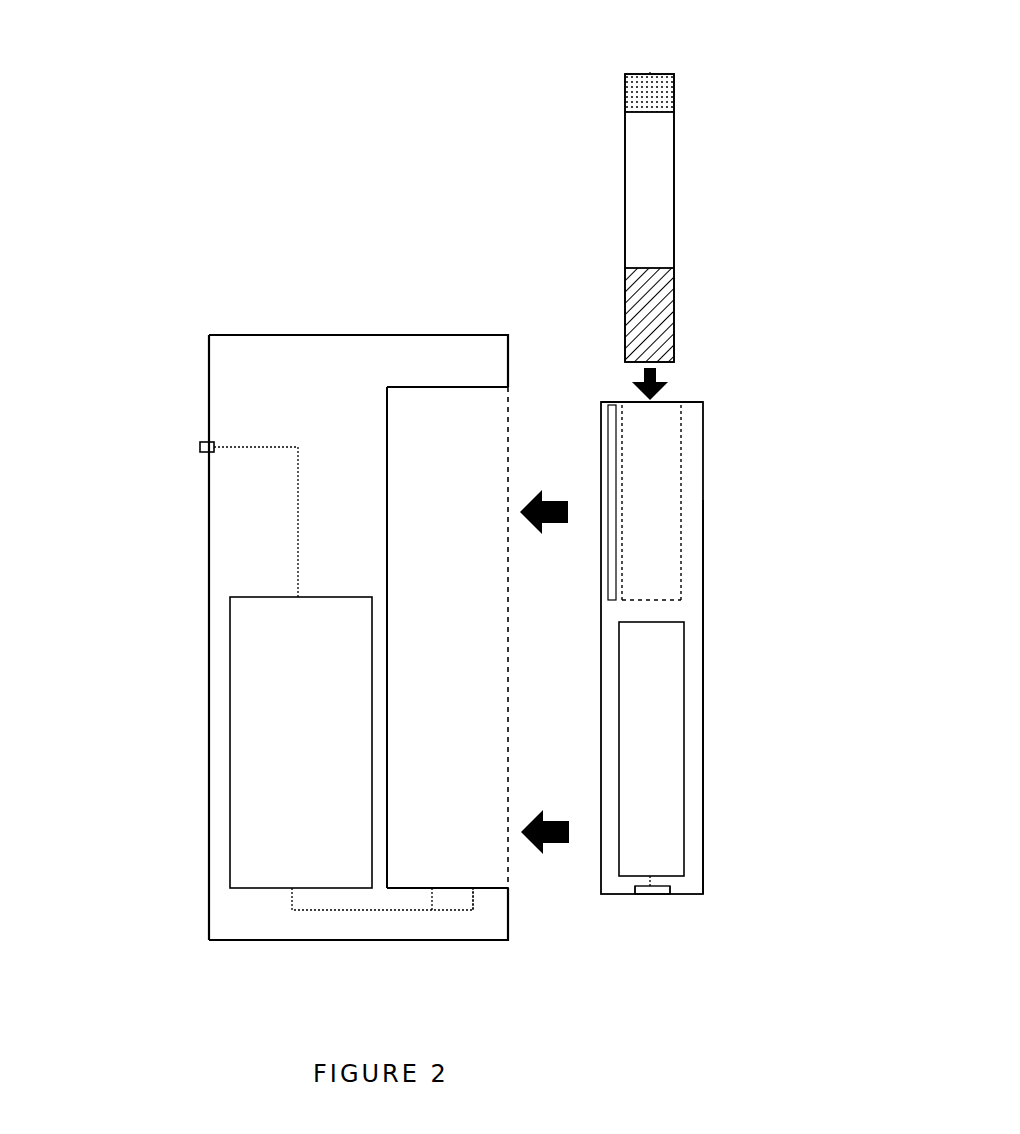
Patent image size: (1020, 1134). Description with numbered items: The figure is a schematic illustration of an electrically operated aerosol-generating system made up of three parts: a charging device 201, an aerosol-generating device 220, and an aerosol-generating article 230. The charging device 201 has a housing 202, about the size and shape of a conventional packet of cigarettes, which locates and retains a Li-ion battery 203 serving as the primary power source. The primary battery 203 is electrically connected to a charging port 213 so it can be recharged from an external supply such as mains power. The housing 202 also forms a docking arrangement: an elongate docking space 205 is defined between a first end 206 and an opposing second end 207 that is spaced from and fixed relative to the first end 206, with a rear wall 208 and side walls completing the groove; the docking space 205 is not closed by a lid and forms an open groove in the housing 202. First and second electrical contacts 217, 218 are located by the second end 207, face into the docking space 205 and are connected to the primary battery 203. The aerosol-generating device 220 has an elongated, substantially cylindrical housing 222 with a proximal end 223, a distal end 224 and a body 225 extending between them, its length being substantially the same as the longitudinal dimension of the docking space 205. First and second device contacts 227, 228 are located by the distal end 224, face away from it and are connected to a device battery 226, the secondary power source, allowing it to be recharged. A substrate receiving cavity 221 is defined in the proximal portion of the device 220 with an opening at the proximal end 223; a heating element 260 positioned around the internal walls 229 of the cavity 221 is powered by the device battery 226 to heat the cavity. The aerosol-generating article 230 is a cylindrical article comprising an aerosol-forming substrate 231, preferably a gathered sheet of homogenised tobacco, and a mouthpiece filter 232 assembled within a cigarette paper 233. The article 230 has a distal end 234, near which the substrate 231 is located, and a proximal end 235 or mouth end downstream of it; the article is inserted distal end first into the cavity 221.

The charging device 201 is at (228, 316).
The housing 202 is at (208, 372).
The Li-ion battery 203 is at (253, 750).
The docking space 205 is at (470, 633).
The first end 206 is at (455, 388).
The second end 207 is at (490, 888).
The rear wall 208 is at (390, 498).
The charging port 213 is at (198, 448).
The first electrical contact 217 is at (432, 888).
The second electrical contact 218 is at (473, 888).
The aerosol-generating device 220 is at (716, 152).
The substrate receiving cavity 221 is at (665, 508).
The housing 222 is at (703, 790).
The proximal end 223 is at (690, 402).
The distal end 224 is at (695, 895).
The body 225 is at (703, 606).
The device battery 226 is at (667, 710).
The first device contact 227 is at (632, 895).
The second device contact 228 is at (665, 895).
The internal walls 229 is at (685, 556).
The aerosol-generating article 230 is at (716, 112).
The aerosol-forming substrate 231 is at (674, 304).
The mouthpiece filter 232 is at (668, 90).
The cigarette paper 233 is at (674, 200).
The distal end 234 is at (665, 366).
The proximal end 235 is at (650, 73).
The heating element 260 is at (610, 572).